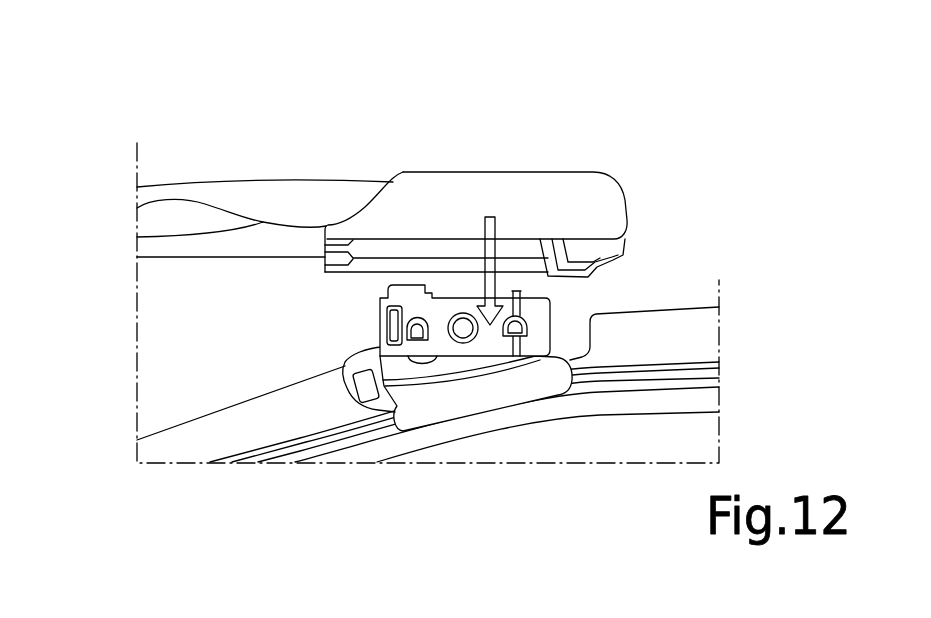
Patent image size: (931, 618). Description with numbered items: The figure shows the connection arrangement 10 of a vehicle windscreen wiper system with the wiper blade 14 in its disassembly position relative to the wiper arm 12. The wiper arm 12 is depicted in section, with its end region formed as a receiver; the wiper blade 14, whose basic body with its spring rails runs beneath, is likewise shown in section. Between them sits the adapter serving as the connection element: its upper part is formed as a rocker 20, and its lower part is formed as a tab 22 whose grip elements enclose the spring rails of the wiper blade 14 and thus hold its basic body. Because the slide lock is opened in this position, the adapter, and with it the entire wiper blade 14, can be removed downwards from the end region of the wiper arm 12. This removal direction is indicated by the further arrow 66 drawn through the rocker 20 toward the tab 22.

The connection arrangement 10 is at (120, 74).
The wiper arm 12 is at (294, 147).
The wiper blade 14 is at (637, 277).
The rocker 20 is at (453, 298).
The tab 22 is at (497, 393).
The further arrow 66 is at (490, 217).